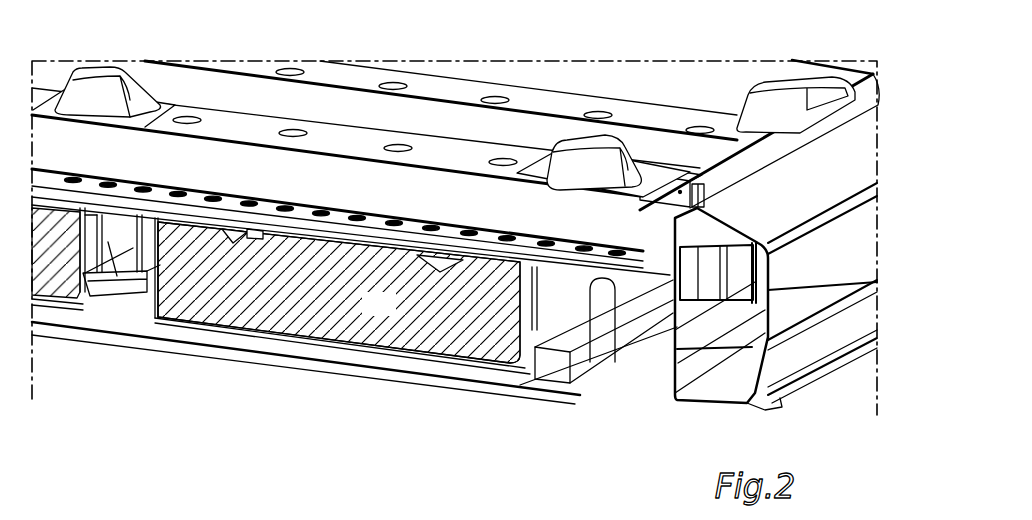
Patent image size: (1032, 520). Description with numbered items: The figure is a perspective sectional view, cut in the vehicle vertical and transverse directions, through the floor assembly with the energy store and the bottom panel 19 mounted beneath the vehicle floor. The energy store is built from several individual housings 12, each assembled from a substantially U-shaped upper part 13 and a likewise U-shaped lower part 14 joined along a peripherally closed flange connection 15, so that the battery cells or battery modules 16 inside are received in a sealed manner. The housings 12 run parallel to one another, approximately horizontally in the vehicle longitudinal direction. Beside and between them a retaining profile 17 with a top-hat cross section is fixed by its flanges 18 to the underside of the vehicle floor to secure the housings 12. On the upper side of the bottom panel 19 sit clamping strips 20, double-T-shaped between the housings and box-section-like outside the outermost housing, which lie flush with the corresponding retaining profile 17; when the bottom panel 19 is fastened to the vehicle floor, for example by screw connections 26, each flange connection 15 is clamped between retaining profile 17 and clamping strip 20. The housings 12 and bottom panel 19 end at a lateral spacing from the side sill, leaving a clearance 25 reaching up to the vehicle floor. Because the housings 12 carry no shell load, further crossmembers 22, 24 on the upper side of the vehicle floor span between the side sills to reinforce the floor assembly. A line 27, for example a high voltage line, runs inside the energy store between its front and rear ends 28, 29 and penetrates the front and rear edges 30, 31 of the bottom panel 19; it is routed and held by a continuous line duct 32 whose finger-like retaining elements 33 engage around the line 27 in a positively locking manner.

The individual housing 12 is at (65, 280).
The upper part 13 is at (258, 245).
The lower part 14 is at (377, 350).
The flange connection 15 is at (110, 245).
The battery cells or battery modules 16 is at (364, 316).
The retaining profile 17 is at (125, 283).
The flanges 18 is at (493, 330).
The bottom panel 19 is at (247, 352).
The clamping strip 20 is at (130, 288).
The crossmember 22 is at (487, 205).
The crossmember 24 is at (660, 158).
The clearance 25 is at (658, 354).
The screw connections 26 is at (762, 289).
The line 27 is at (690, 203).
The front end 28 is at (717, 273).
The rear end 29 is at (740, 282).
The front edge 30 is at (703, 323).
The rear edge 31 is at (722, 178).
The line duct 32 is at (780, 397).
The retaining elements 33 is at (790, 313).